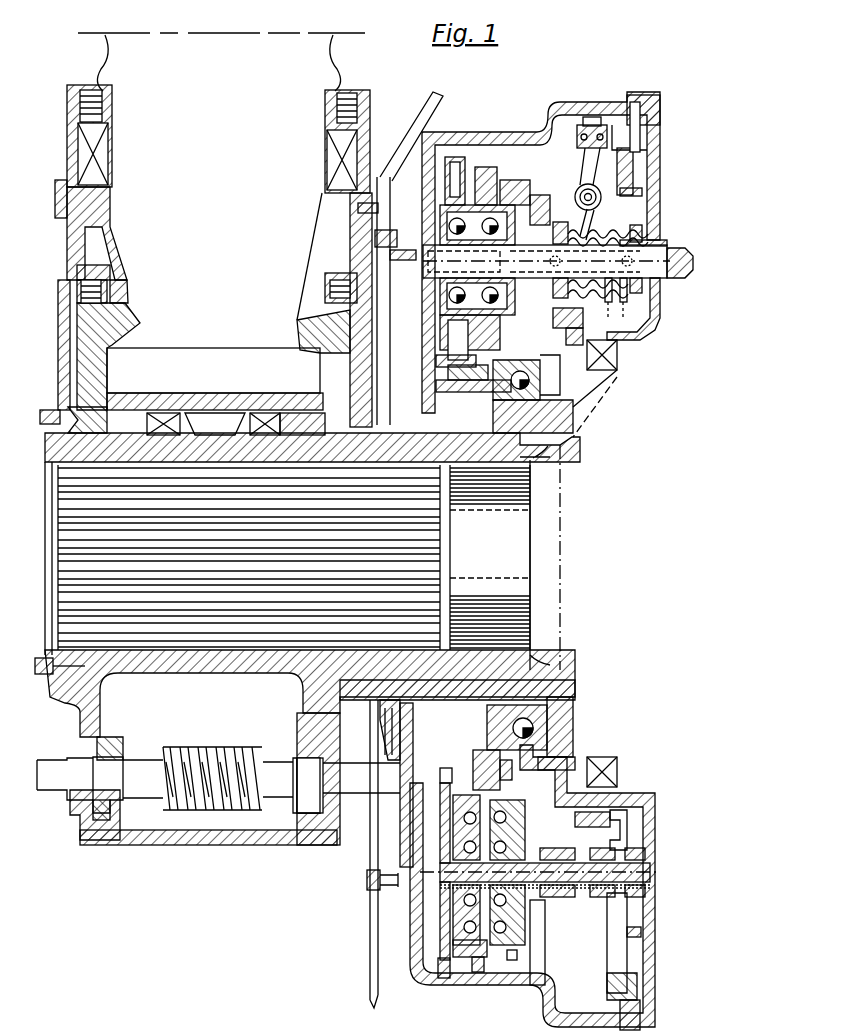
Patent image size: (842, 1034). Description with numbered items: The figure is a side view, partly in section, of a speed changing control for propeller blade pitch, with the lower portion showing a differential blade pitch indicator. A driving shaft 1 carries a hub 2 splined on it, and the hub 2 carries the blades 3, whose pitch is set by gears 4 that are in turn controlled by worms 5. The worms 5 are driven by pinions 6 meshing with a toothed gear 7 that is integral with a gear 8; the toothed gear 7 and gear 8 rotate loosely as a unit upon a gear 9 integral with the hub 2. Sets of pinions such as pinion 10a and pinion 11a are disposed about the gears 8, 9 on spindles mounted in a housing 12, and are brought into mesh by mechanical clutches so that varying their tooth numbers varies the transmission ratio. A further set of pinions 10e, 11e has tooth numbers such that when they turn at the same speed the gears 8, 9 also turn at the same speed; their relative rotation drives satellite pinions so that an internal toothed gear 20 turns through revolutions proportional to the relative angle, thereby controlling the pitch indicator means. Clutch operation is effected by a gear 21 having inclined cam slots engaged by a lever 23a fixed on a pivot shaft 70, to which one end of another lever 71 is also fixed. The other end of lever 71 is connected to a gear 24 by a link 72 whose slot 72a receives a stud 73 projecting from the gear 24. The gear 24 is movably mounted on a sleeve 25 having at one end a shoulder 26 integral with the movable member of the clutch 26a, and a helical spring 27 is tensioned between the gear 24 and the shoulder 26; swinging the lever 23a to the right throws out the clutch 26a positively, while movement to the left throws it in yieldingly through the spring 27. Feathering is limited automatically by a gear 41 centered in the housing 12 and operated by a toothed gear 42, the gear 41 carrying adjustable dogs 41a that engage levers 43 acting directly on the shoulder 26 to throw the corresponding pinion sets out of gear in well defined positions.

The driving shaft 1 is at (70, 538).
The hub 2 is at (543, 447).
The blades 3 is at (205, 48).
The gears 4 is at (80, 394).
The worms 5 is at (268, 802).
The pinions 6 is at (382, 850).
The toothed gear 7 is at (385, 728).
The gear 8 is at (438, 370).
The gear 9 is at (440, 351).
The pinion 10a is at (457, 155).
The pinion 11a is at (488, 165).
The pinion 10e is at (440, 978).
The pinion 11e is at (476, 972).
The housing 12 is at (410, 982).
The internal toothed gear 20 is at (512, 955).
The gear 21 is at (565, 372).
The lever 23a is at (620, 342).
The gear 24 is at (640, 285).
The sleeve 25 is at (645, 240).
The shoulder 26 is at (558, 222).
The clutch 26a is at (518, 180).
The helical spring 27 is at (645, 232).
The gear 41 is at (640, 165).
The adjustable dog 41a is at (622, 128).
The toothed gear 42 is at (622, 835).
The lever 43 is at (580, 150).
The pivot shaft 70 is at (598, 194).
The lever 71 is at (576, 222).
The link 72 is at (604, 302).
The slot 72a is at (624, 302).
The stud 73 is at (693, 280).